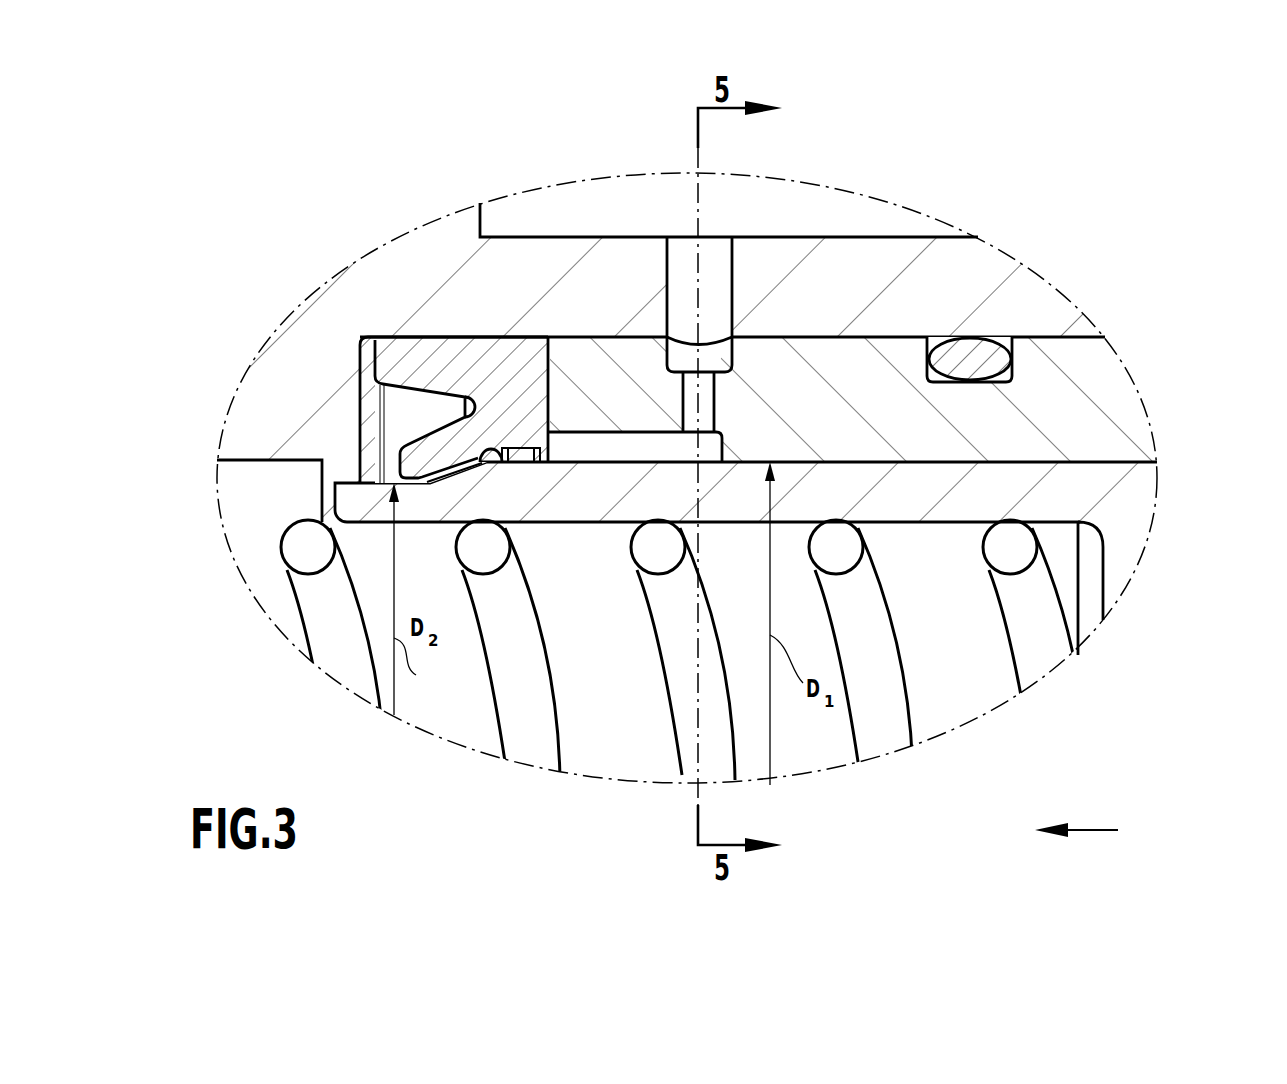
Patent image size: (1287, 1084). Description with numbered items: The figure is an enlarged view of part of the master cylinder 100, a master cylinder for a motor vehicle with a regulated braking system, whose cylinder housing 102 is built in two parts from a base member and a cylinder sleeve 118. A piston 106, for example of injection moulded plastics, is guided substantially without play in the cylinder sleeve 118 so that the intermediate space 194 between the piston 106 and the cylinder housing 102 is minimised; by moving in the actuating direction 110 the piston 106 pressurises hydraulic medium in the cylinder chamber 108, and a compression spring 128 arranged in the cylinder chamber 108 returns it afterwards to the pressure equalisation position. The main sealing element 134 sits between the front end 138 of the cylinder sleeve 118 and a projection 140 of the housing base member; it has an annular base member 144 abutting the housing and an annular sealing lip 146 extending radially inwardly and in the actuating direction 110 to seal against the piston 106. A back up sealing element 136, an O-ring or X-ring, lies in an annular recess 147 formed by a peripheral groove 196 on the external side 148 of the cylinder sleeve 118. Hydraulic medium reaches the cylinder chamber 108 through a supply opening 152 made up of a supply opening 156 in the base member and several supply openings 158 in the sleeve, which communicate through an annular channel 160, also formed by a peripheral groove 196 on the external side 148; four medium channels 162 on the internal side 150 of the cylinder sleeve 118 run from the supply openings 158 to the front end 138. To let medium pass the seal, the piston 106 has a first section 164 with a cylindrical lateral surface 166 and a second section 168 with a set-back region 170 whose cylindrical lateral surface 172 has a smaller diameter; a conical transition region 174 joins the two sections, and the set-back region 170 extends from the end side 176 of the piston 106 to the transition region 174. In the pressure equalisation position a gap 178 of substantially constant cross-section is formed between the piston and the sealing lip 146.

The master cylinder 100 is at (1102, 204).
The cylinder housing 102 is at (347, 312).
The piston 106 is at (1125, 523).
The cylinder chamber 108 is at (945, 660).
The actuating direction 110 is at (1090, 830).
The cylinder sleeve 118 is at (1075, 400).
The compression spring 128 is at (1055, 667).
The main sealing element 134 is at (386, 336).
The back up sealing element 136 is at (1010, 345).
The front end 138 is at (432, 336).
The projection 140 is at (358, 372).
The base member 144 is at (385, 350).
The sealing lip 146 is at (400, 440).
The annular recess 147 is at (1000, 337).
The external side 148 is at (955, 345).
The internal side 150 is at (1048, 467).
The supply opening 152 is at (845, 337).
The supply opening 156 is at (712, 290).
The supply openings 158 is at (690, 405).
The annular channel 160 is at (750, 358).
The medium channels 162 is at (590, 400).
The first section 164 is at (597, 478).
The cylindrical lateral surface 166 is at (520, 395).
The second section 168 is at (400, 462).
The set-back region 170 is at (390, 470).
The cylindrical lateral surface 172 is at (322, 462).
The transition region 174 is at (443, 483).
The end side 176 is at (325, 497).
The gap 178 is at (392, 395).
The intermediate space 194 is at (1005, 462).
The peripheral groove 196 is at (695, 352).